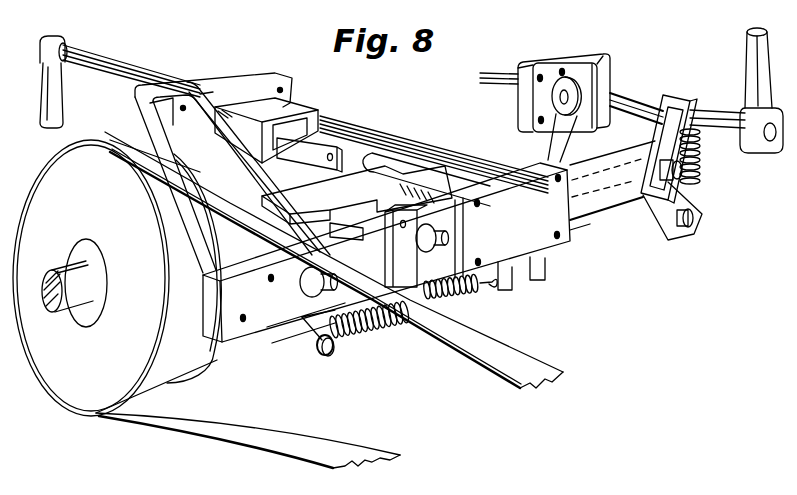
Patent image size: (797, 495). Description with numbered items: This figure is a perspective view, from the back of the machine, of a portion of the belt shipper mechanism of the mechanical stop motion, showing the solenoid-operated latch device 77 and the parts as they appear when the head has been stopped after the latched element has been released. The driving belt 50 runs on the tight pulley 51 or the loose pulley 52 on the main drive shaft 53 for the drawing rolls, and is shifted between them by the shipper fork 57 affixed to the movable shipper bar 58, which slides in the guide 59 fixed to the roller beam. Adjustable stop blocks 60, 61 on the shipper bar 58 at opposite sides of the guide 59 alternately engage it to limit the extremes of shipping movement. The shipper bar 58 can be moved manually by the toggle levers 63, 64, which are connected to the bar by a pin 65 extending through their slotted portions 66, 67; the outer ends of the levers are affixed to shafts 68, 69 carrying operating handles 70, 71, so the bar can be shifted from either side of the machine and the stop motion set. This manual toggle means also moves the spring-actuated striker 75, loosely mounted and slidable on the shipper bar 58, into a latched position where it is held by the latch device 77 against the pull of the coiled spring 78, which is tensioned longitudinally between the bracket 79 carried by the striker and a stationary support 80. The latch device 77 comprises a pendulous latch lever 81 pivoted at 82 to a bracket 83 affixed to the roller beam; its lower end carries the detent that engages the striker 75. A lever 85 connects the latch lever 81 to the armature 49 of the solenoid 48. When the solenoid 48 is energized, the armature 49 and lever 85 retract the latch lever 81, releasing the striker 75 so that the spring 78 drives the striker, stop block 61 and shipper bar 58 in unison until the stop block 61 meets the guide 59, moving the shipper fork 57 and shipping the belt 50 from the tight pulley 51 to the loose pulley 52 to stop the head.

The solenoid 48 is at (283, 110).
The armature 49 is at (313, 157).
The driving belt 50 is at (300, 447).
The tight pulley 51 is at (207, 361).
The loose pulley 52 is at (162, 383).
The main drive shaft 53 is at (66, 313).
The shipper fork 57 is at (138, 107).
The shipper bar 58 is at (593, 213).
The guide 59 is at (297, 203).
The stop block 60 is at (353, 330).
The stop block 61 is at (445, 300).
The toggle lever 63 is at (667, 135).
The toggle lever 64 is at (673, 230).
The pin 65 is at (683, 171).
The slotted portion 66 is at (673, 167).
The slotted portion 67 is at (700, 215).
The shaft 68 is at (707, 117).
The shaft 69 is at (113, 63).
The operating handle 70 is at (753, 52).
The operating handle 71 is at (50, 112).
The striker 75 is at (547, 237).
The latch device 77 is at (550, 54).
The coiled spring 78 is at (393, 320).
The bracket 79 is at (530, 257).
The stationary support 80 is at (293, 338).
The latch lever 81 is at (553, 147).
The pivot 82 is at (558, 98).
The bracket 83 is at (592, 60).
The lever 85 is at (400, 163).